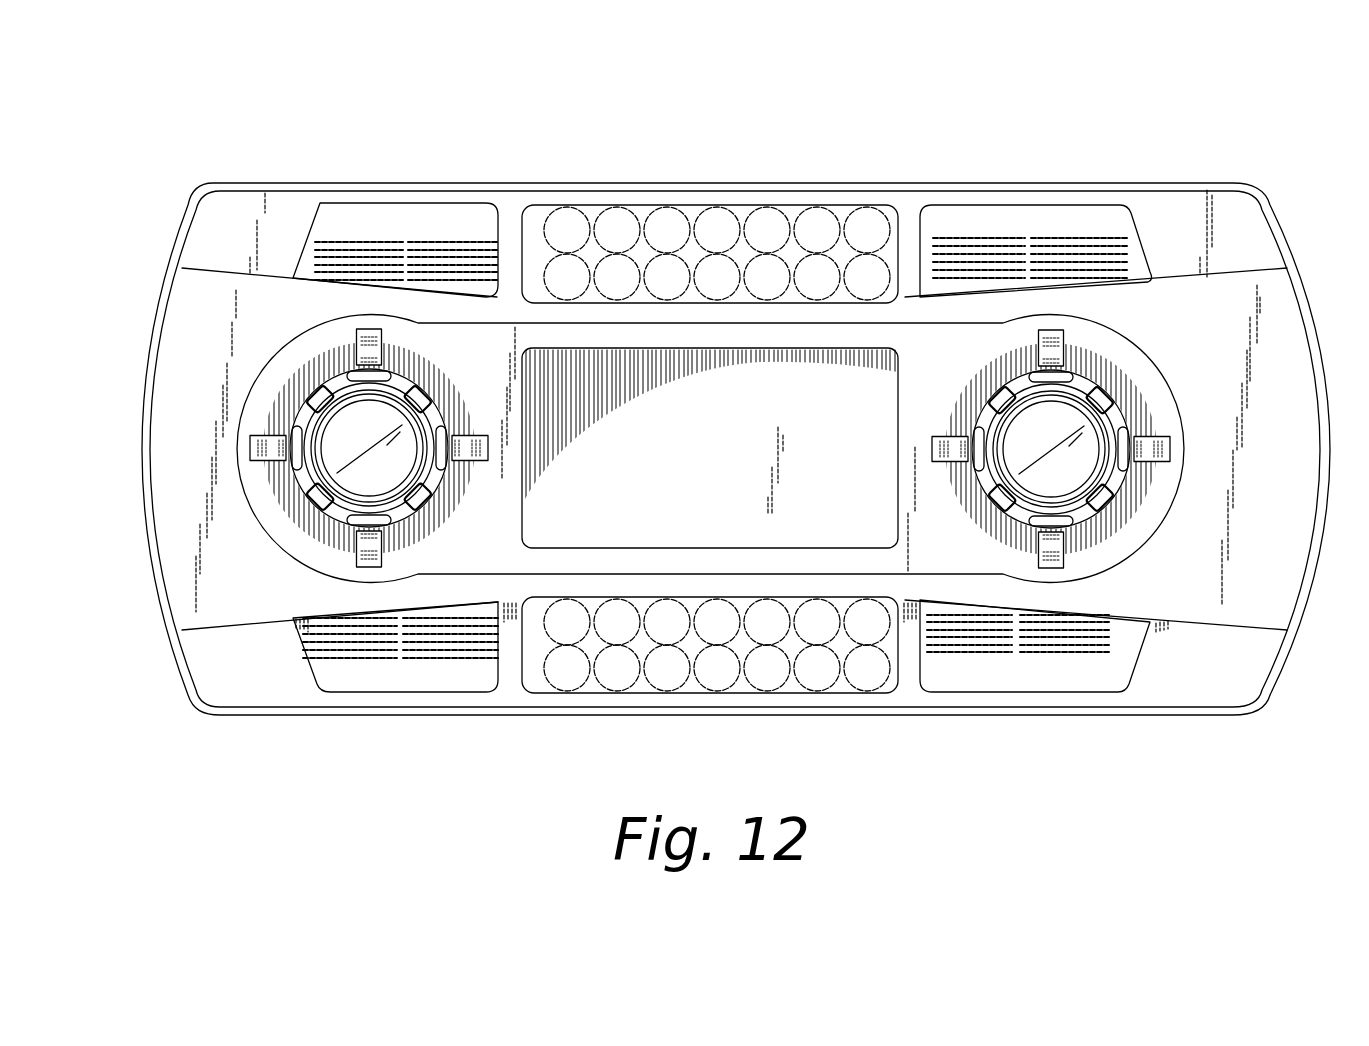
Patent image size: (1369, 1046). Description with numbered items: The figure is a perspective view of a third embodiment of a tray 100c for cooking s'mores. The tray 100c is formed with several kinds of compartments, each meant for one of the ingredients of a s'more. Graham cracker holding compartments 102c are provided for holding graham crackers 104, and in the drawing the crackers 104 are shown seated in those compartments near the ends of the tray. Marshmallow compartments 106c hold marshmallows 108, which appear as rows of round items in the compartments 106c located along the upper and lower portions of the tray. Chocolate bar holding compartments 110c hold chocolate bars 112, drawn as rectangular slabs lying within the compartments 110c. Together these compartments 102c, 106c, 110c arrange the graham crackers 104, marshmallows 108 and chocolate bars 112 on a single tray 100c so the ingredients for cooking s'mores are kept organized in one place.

The tray 100c is at (872, 100).
The graham cracker holding compartment 102c is at (1065, 218).
The graham cracker 104 is at (980, 247).
The marshmallow compartment 106c is at (742, 213).
The marshmallow 108 is at (665, 217).
The chocolate bar holding compartment 110c is at (463, 218).
The chocolate bar 112 is at (382, 245).